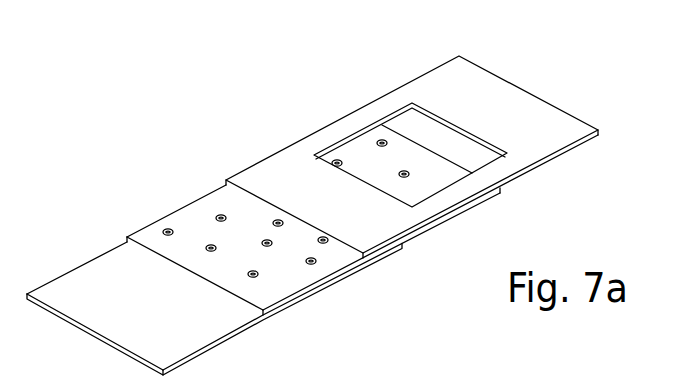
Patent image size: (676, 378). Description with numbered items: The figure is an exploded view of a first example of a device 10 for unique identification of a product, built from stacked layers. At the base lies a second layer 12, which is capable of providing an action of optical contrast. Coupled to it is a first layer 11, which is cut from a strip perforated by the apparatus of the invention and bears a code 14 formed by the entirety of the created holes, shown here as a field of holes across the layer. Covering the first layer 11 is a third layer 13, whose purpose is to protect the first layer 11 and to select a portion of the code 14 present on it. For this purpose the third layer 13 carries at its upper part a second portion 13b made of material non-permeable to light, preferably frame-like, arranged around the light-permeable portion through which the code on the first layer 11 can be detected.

The device for unique identification of a product 10 is at (312, 201).
The first layer 11 is at (362, 243).
The second layer 12 is at (80, 282).
The third layer 13 is at (412, 143).
The second portion 13b is at (447, 93).
The code 14 is at (290, 278).